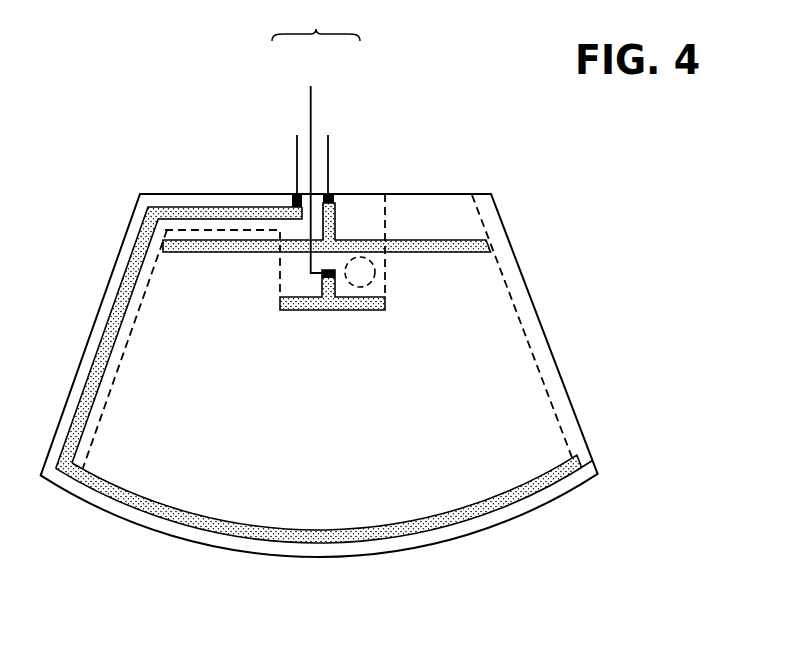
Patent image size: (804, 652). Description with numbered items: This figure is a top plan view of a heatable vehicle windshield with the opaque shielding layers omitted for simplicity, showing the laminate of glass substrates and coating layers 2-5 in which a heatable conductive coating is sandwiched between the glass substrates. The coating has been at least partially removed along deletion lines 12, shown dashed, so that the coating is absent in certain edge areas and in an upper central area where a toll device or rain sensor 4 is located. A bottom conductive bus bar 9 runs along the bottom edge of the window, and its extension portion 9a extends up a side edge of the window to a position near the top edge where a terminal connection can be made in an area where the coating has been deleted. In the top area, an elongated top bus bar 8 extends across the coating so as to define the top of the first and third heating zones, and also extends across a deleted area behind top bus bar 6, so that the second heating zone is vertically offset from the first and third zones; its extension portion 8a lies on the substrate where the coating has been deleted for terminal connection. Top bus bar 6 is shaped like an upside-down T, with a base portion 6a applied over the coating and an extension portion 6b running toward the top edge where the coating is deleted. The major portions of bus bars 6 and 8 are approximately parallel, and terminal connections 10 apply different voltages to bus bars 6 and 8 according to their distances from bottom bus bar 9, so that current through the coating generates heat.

The glass substrates and coating layers 2-5 is at (500, 405).
The bottom conductive bus bar 9 is at (288, 545).
The extension portion of bottom bus bar 9a is at (237, 214).
The top conductive bus bar 8 is at (455, 243).
The extension portion of bus bar 8 8a is at (348, 203).
The voltage connection terminals 10 is at (316, 138).
The toll device or rain sensor 4 is at (362, 257).
The top bus bar 6 is at (330, 312).
The base portion of bus bar 6 6a is at (367, 312).
The extension portion of bus bar 6 6b is at (312, 288).
The deletion lines 12 is at (387, 212).